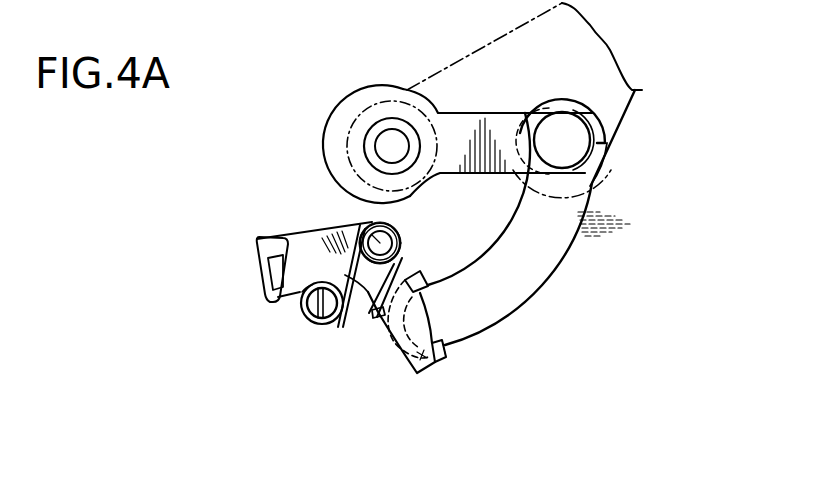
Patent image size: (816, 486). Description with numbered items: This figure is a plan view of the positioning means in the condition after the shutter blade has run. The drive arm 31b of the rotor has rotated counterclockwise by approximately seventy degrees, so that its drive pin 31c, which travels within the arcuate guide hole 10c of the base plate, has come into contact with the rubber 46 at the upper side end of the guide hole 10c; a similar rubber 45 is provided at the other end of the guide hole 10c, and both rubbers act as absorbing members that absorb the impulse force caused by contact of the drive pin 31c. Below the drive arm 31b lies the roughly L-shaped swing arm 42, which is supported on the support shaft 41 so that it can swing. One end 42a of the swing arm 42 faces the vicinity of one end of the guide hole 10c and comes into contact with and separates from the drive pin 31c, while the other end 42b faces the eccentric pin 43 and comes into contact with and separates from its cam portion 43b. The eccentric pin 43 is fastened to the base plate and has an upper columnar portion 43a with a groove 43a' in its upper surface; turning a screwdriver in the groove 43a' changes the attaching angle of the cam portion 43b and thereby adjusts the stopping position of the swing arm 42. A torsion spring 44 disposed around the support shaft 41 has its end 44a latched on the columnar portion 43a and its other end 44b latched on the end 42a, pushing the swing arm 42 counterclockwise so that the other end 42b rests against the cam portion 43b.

The guide hole 10c is at (553, 247).
The drive arm 31b is at (465, 122).
The drive pin 31c is at (567, 143).
The support shaft 41 is at (363, 223).
The swing arm 42 is at (309, 229).
The one end of swing arm 42a is at (420, 363).
The other end of swing arm 42b is at (262, 283).
The eccentric pin 43 is at (302, 266).
The columnar portion 43a is at (268, 342).
The groove 43a' is at (277, 364).
The cam portion 43b is at (293, 298).
The torsion spring 44 is at (410, 223).
The end of torsion spring 44a is at (343, 300).
The other end of torsion spring 44b is at (363, 320).
The rubber 45 is at (443, 350).
The rubber 46 is at (592, 105).